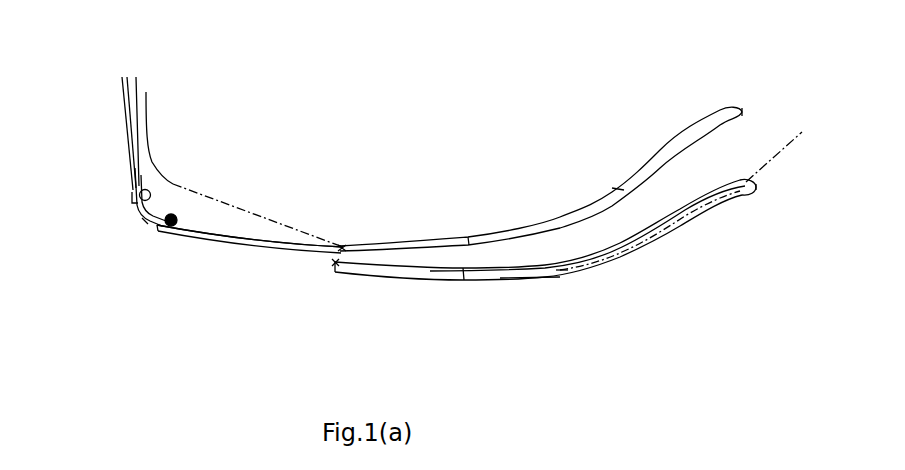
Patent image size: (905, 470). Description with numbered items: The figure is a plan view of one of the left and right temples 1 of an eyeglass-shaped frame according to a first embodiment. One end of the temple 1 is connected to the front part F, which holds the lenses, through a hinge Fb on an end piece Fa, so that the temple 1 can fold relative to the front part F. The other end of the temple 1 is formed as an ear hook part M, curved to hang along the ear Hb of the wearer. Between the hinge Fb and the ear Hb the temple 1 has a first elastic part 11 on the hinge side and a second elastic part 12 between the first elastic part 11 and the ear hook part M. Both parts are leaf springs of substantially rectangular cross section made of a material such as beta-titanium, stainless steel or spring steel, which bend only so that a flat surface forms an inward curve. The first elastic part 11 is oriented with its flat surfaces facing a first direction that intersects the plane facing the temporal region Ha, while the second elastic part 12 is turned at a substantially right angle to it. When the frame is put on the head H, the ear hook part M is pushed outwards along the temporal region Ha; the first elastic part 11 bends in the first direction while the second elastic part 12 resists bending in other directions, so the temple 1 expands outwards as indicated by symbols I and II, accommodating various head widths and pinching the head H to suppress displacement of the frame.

The temple 1 is at (209, 242).
The first elastic part 11 is at (272, 250).
The second elastic part 12 is at (424, 342).
The front part F is at (117, 90).
The end piece Fa is at (146, 221).
The hinge Fb is at (173, 215).
The head H is at (148, 157).
The temporal region Ha is at (623, 250).
The ear Hb is at (512, 270).
The ear hook part M is at (618, 188).
The symbol indicating temple expansion I is at (741, 101).
The symbol indicating temple expansion II is at (749, 210).